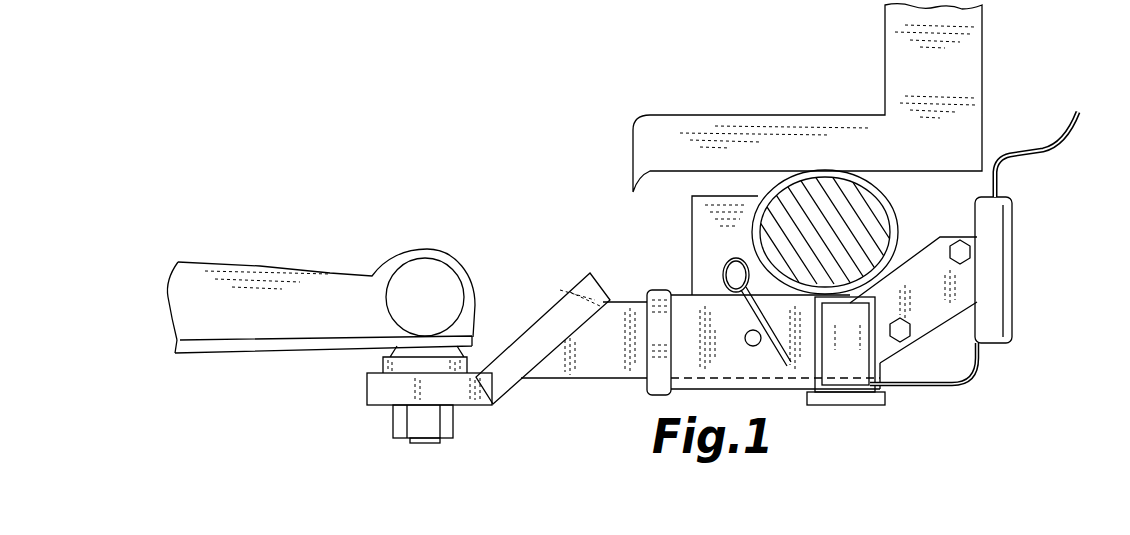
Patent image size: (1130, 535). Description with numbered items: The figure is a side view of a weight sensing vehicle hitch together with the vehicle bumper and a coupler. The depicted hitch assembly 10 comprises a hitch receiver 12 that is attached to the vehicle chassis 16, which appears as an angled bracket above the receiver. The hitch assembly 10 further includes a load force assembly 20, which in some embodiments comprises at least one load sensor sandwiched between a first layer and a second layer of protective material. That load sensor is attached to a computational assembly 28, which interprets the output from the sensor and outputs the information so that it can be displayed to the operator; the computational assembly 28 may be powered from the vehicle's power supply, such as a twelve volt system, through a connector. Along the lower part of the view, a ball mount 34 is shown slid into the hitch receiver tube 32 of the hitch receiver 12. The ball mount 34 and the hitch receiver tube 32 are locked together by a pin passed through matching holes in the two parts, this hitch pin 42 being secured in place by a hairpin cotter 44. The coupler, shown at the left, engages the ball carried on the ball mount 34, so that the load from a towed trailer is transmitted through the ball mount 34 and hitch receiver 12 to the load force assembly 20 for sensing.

The hitch assembly 10 is at (603, 125).
The hitch receiver 12 is at (884, 422).
The vehicle chassis 16 is at (970, 60).
The load force assembly 20 is at (984, 390).
The computational assembly 28 is at (993, 242).
The hitch receiver tube 32 is at (676, 310).
The ball mount 34 is at (607, 368).
The hitch pin 42 is at (760, 346).
The hairpin cotter 44 is at (731, 262).